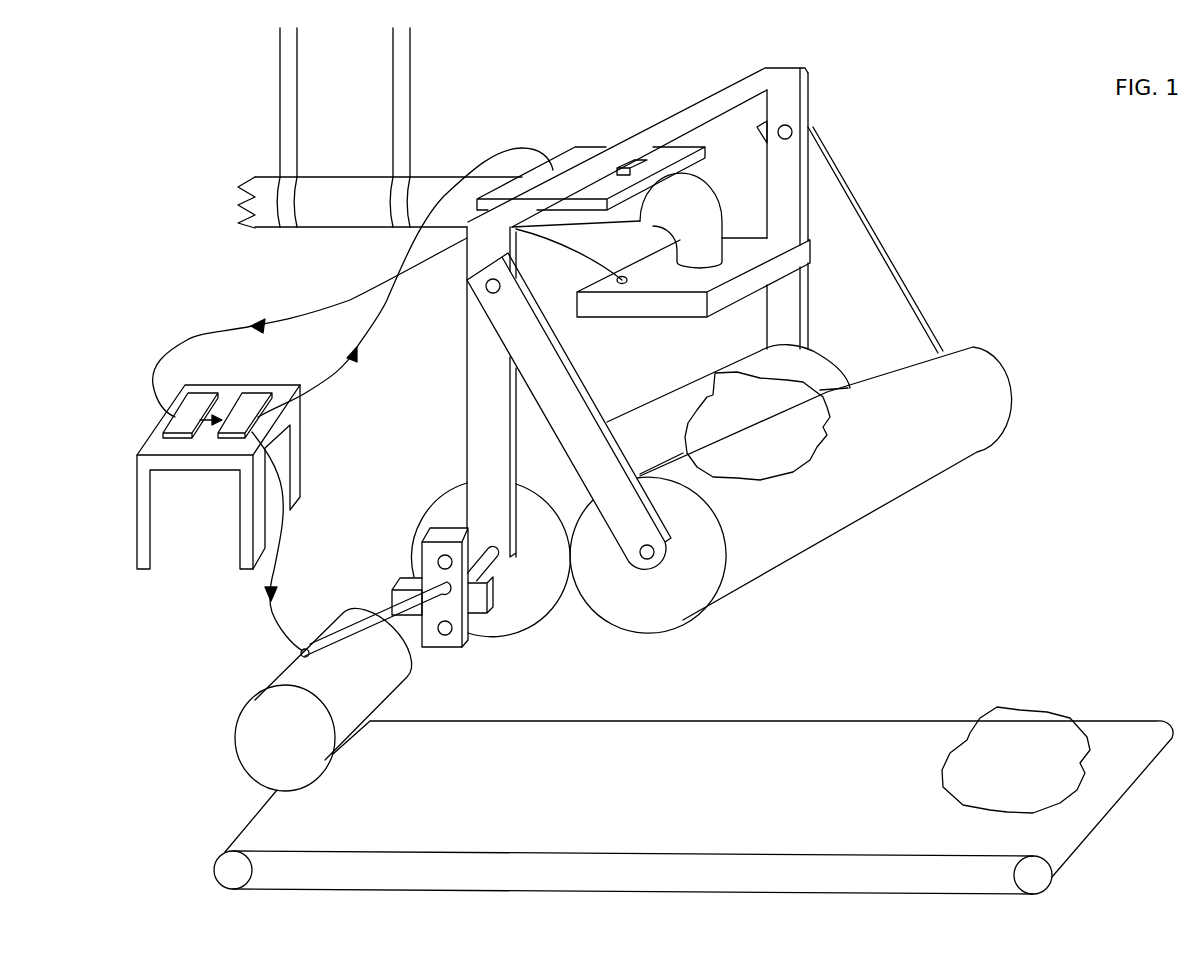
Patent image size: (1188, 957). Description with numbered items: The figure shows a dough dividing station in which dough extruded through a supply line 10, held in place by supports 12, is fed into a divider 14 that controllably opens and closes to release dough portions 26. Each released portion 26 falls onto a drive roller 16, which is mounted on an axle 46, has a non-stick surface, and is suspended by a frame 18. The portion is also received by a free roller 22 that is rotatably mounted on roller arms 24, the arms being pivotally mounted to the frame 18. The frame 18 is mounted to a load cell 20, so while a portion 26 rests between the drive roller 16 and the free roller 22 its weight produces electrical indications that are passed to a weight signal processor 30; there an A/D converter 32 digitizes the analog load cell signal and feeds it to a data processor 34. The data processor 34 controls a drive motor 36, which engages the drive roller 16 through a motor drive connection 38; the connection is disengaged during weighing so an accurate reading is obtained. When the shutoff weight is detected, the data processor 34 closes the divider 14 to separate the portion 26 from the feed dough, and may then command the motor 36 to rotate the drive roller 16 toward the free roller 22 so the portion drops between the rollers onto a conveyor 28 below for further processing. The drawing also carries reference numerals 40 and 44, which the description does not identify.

The supply line 10 is at (427, 176).
The supports 12 is at (297, 48).
The divider 14 is at (658, 305).
The drive roller 16 is at (542, 620).
The frame 18 is at (768, 76).
The load cell 20 is at (577, 146).
The free roller 22 is at (984, 350).
The roller arms 24 is at (498, 342).
The dough portion 26 is at (828, 433).
The conveyor 28 is at (795, 720).
The weight signal processor 30 is at (196, 481).
The A/D converter 32 is at (202, 402).
The data processor 34 is at (258, 401).
The drive motor 36 is at (278, 674).
The motor drive connection 38 is at (448, 652).
The bracket 40 is at (430, 532).
The block 44 is at (396, 587).
The axle 46 is at (490, 575).